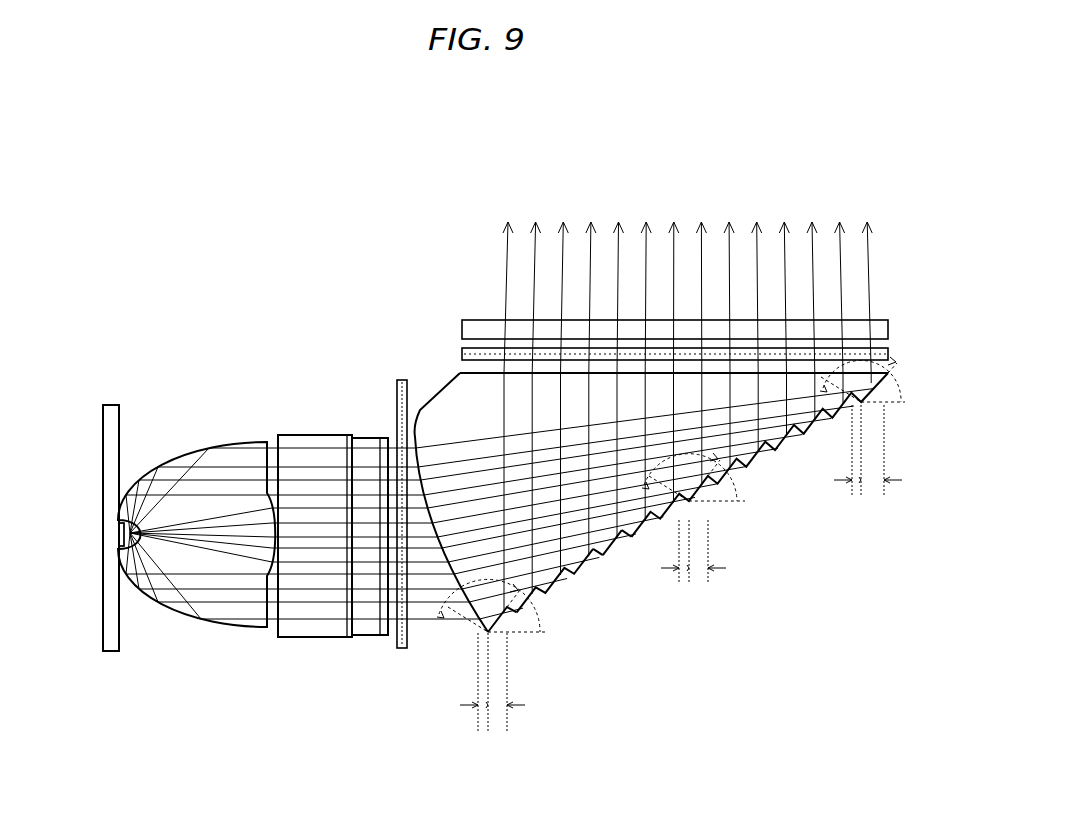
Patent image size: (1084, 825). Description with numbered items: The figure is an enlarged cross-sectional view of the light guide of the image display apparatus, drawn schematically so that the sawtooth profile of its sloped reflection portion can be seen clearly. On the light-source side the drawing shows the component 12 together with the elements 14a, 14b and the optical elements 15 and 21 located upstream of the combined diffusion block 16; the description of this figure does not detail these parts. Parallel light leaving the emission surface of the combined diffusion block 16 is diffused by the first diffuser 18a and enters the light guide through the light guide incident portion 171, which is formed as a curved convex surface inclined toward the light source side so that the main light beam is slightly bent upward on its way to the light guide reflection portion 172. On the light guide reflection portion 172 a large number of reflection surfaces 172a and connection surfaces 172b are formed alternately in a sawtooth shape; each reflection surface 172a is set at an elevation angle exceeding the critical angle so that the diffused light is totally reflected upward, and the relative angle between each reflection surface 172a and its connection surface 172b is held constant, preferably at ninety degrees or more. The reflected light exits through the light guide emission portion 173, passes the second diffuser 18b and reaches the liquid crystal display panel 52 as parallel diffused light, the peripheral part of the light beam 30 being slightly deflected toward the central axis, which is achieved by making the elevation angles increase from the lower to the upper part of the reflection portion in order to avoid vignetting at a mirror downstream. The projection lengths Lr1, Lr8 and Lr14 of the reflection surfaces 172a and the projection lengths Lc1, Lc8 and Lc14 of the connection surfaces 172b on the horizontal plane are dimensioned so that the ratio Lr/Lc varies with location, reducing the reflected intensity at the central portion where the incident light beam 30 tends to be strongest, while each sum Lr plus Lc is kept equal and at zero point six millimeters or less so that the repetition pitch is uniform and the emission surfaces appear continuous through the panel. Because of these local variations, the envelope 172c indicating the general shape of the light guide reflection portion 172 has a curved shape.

The substrate 12 is at (122, 420).
The light source (LED) 14a is at (118, 563).
The light source (LED) 14b is at (121, 534).
The collimating lens 15 is at (245, 445).
The lens 21 is at (322, 435).
The combined diffusion block 16 is at (380, 438).
The first diffuser 18a is at (401, 380).
The second diffuser 18b is at (461, 353).
The liquid crystal display panel 52 is at (879, 320).
The light guide emission portion 173 is at (490, 372).
The light beam 30 is at (498, 220).
The light guide incident portion 171 is at (463, 617).
The light guide reflection portion 172 is at (697, 605).
The reflection surface 172a is at (618, 541).
The connection surface 172b is at (602, 556).
The envelope 172c is at (588, 566).
The projection length of connection surface Lc1 is at (464, 682).
The projection length of reflection surface Lr1 is at (524, 682).
The projection length of connection surface Lc8 is at (664, 551).
The projection length of reflection surface Lr8 is at (730, 551).
The projection length of connection surface Lc14 is at (830, 450).
The projection length of reflection surface Lr14 is at (909, 450).